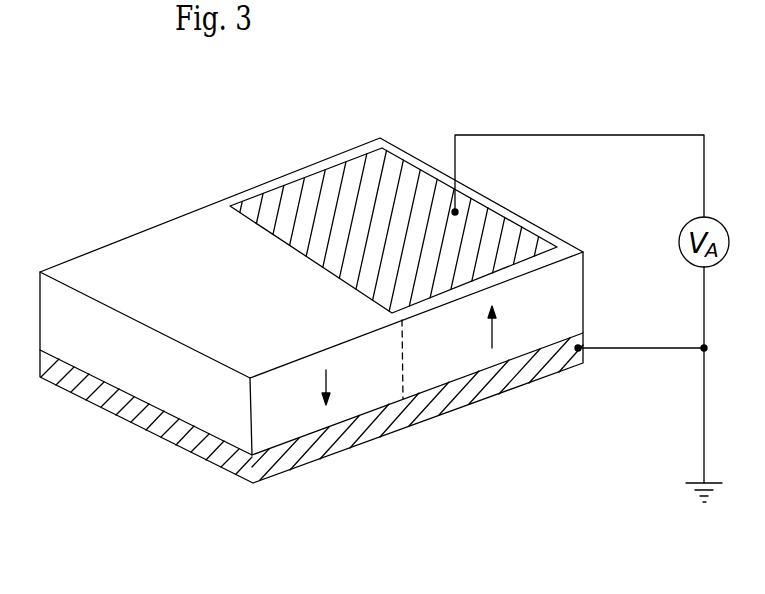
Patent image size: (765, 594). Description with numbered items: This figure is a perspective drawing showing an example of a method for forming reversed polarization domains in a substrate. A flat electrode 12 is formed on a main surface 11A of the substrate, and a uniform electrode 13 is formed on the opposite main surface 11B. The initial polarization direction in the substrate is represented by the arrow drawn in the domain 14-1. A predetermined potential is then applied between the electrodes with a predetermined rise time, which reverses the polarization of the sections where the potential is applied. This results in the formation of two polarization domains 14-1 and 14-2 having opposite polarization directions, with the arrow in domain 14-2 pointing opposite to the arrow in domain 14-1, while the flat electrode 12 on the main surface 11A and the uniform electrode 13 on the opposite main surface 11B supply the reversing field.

The main surface 11A is at (173, 250).
The opposite main surface 11B is at (328, 432).
The flat electrode 12 is at (495, 232).
The uniform electrode 13 is at (550, 375).
The polarization domain 14-1 is at (275, 423).
The polarization domain 14-2 is at (458, 362).